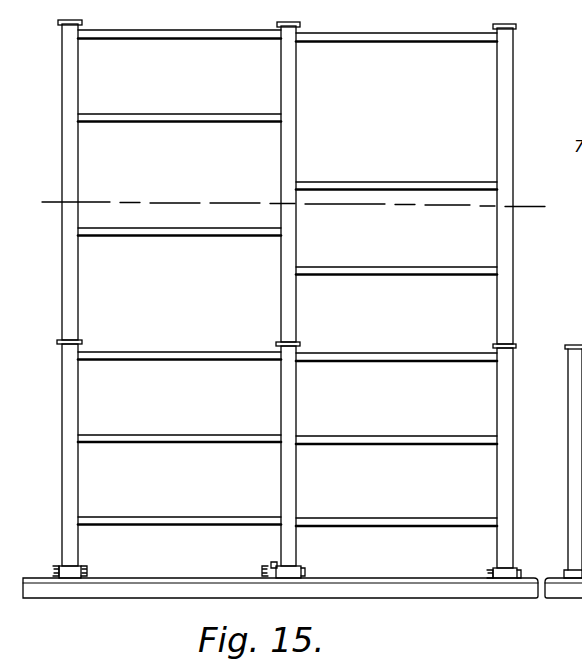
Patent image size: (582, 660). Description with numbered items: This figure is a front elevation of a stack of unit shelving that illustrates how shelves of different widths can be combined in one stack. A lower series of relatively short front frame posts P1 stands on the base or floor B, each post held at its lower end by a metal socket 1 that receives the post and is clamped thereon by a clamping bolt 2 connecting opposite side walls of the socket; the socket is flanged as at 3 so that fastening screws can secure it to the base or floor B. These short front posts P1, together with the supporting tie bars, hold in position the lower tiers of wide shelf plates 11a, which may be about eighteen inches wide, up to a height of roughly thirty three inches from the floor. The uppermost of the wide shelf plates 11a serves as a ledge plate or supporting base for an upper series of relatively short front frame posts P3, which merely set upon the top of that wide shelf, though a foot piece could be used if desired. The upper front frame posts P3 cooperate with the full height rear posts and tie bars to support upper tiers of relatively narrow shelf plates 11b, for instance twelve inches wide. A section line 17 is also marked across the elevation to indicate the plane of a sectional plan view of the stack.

The upper front frame post P3 is at (79, 76).
The front frame post P1 is at (79, 410).
The shelf plate 11b is at (404, 267).
The wide shelf plate 11a is at (386, 519).
The section line 17- 17 is at (291, 210).
The metal socket 1 is at (60, 566).
The clamping bolt 2 is at (272, 562).
The flange 3 is at (89, 574).
The base or floor B is at (128, 598).